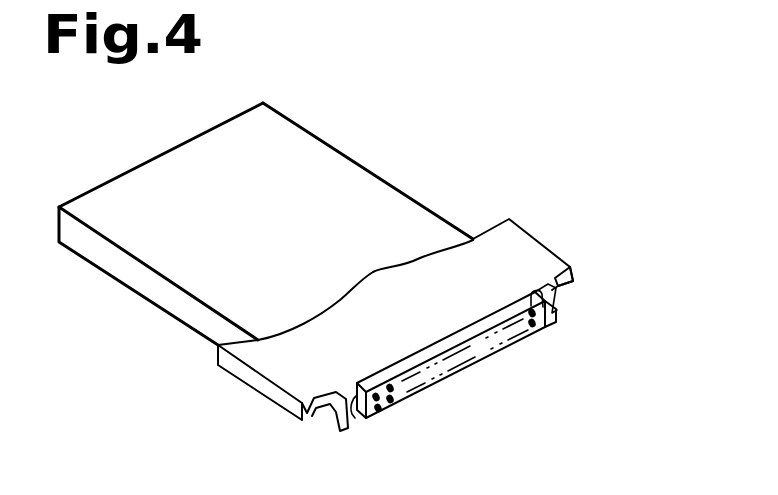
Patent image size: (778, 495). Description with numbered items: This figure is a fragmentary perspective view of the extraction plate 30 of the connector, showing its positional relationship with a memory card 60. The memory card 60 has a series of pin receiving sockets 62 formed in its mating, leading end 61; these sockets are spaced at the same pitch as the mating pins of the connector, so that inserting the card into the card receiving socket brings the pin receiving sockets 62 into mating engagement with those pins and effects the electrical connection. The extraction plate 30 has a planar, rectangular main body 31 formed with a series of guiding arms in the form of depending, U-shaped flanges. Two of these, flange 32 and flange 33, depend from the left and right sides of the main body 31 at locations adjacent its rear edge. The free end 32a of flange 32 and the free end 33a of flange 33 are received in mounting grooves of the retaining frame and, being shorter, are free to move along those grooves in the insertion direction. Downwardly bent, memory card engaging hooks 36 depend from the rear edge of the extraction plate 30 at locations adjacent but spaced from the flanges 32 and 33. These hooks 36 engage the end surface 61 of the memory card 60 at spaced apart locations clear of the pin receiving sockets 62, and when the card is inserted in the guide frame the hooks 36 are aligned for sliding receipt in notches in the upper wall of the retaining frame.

The memory card 60 is at (356, 186).
The extraction plate 30 is at (535, 227).
The main body 31 is at (409, 325).
The flange 32 is at (268, 393).
The free end 32a is at (307, 424).
The flange 33 is at (565, 257).
The free end 33a is at (573, 278).
The memory card engaging hook 36 is at (566, 297).
The mating leading end 61 is at (537, 326).
The pin receiving sockets 62 is at (380, 397).